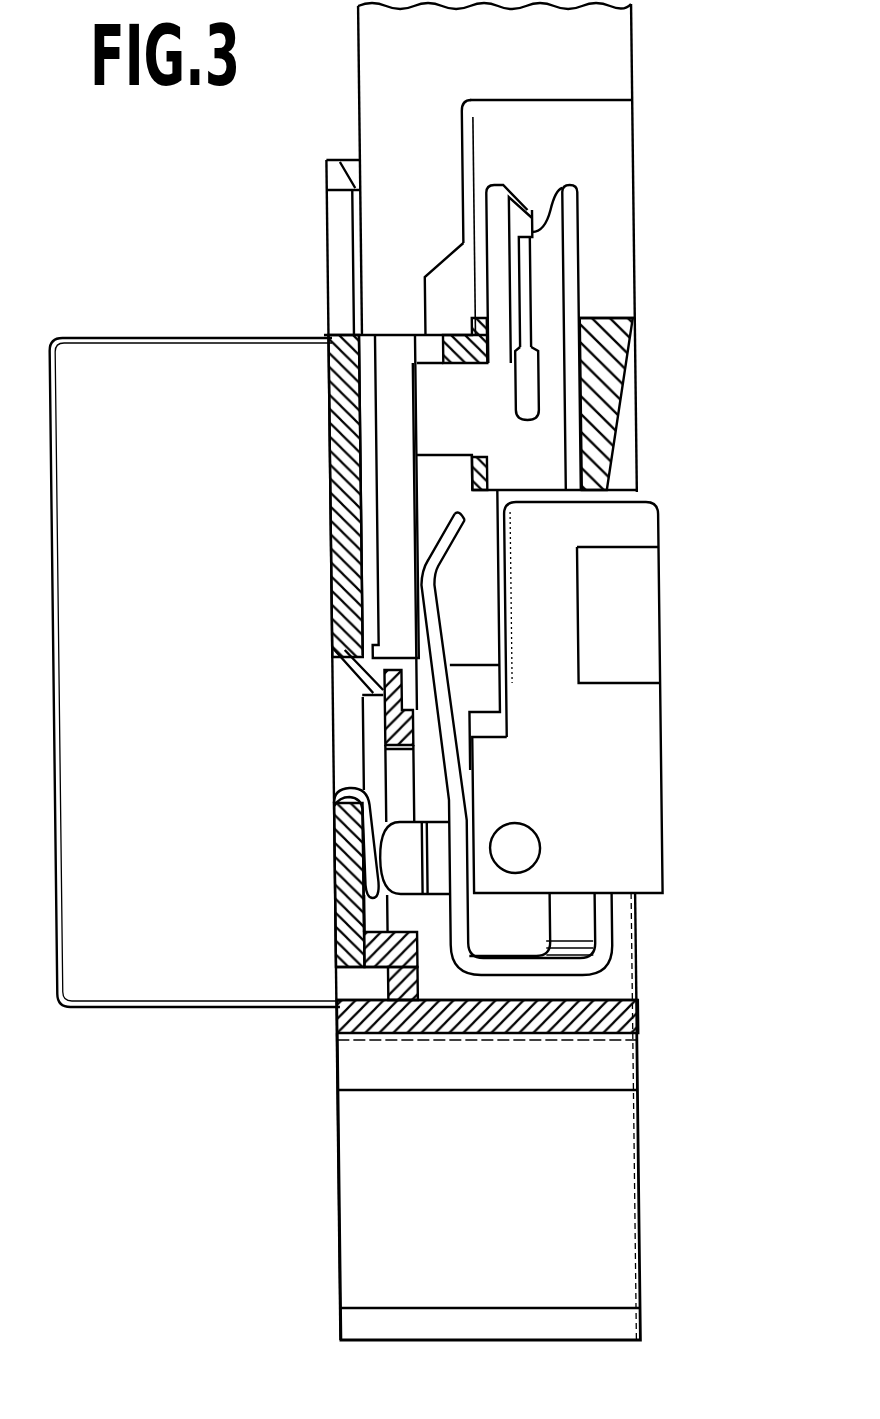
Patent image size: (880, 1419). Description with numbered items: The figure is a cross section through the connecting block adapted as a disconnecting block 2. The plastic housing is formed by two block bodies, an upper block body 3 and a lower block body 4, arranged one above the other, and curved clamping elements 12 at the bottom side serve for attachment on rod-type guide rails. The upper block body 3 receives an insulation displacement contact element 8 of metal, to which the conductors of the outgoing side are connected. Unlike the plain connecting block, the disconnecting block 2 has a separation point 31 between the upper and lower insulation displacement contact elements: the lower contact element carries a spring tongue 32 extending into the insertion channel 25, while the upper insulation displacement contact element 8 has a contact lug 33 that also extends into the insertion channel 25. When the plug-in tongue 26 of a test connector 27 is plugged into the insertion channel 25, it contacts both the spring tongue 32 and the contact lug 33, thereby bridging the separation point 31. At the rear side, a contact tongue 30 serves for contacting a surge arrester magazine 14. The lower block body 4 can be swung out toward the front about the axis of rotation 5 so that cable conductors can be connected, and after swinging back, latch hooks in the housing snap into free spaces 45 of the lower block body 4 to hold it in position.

The disconnecting block 2 is at (678, 376).
The upper block body 3 is at (621, 358).
The lower block body 4 is at (580, 691).
The axis of rotation 5 is at (507, 841).
The insulation displacement contact element 8 is at (554, 268).
The clamping element 12 is at (620, 1330).
The surge arrester magazine 14 is at (116, 356).
The insertion channel 25 is at (356, 487).
The plug-in tongue 26 is at (384, 525).
The test connector 27 is at (620, 52).
The contact tongue 30 is at (362, 878).
The separation point 31 is at (376, 715).
The spring tongue 32 is at (426, 623).
The contact lug 33 is at (440, 452).
The free space 45 is at (634, 617).